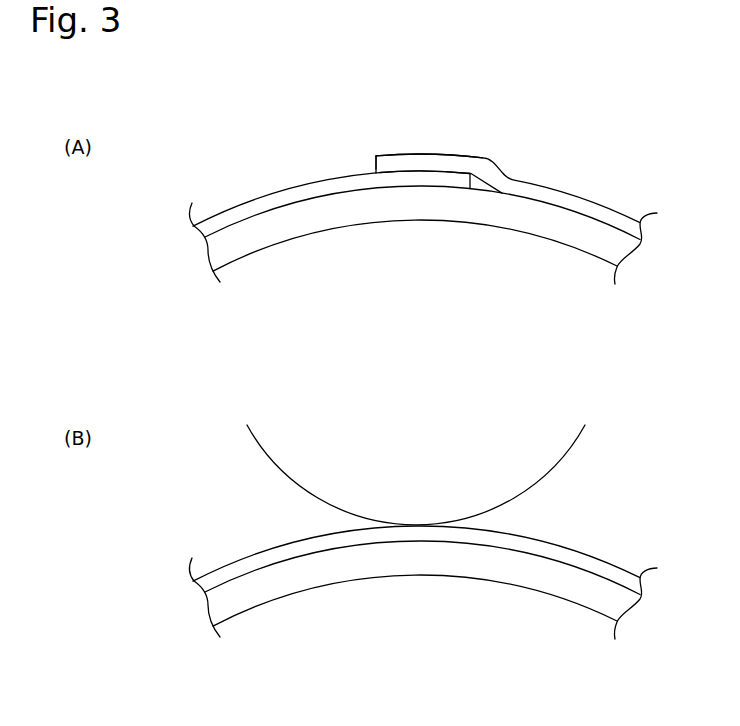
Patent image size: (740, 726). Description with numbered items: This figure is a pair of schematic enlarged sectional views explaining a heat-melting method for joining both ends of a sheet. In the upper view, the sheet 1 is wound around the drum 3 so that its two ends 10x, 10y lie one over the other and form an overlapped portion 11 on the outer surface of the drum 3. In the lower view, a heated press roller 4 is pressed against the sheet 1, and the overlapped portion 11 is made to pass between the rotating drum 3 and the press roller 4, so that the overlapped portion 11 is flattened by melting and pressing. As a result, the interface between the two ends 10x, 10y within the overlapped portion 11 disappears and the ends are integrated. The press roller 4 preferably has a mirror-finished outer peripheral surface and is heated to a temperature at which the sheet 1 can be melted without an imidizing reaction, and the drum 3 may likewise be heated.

The sheet 1 is at (260, 203).
The drum 3 is at (417, 208).
The press roller 4 is at (424, 491).
The end of the sheet 10x is at (428, 163).
The end of the sheet 10y is at (428, 178).
The overlapped portion 11 is at (472, 145).